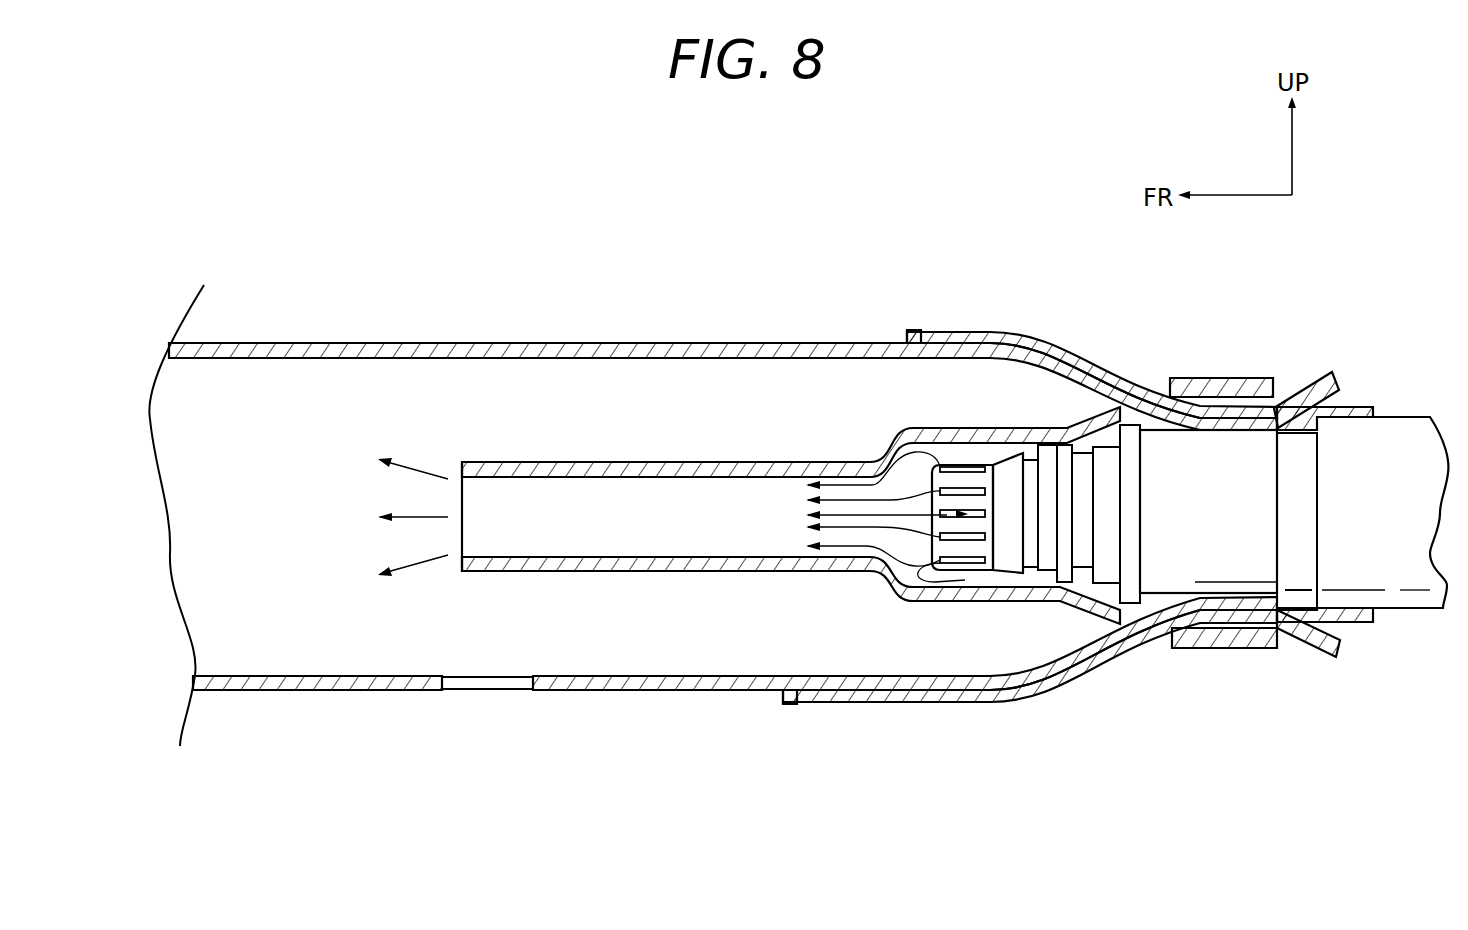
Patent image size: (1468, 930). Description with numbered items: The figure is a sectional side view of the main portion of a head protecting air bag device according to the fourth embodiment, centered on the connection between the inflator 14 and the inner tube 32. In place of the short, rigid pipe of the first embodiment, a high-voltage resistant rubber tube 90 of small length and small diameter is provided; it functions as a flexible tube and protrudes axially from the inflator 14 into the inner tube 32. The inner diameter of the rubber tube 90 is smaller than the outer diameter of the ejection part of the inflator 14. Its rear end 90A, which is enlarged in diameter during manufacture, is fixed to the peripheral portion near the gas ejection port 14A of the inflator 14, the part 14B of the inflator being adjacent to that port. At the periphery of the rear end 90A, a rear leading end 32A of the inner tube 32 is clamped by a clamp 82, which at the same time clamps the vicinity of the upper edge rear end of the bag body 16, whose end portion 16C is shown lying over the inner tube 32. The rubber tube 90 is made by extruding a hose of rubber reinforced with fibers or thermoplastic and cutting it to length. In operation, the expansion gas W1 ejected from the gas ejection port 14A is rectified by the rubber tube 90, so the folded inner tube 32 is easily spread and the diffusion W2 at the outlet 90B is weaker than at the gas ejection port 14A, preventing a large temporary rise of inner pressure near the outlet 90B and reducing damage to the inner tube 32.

The inflator 14 is at (1405, 407).
The gas ejection port 14A is at (915, 585).
The part of the inflator adjacent to the gas ejection port 14B is at (1030, 525).
The bag body 16 is at (1062, 340).
The end portion of hose 16C is at (970, 332).
The inner tube 32 is at (515, 337).
The rear leading end of the inner tube 32A is at (1313, 370).
The clamp 82 is at (1238, 378).
The high-voltage resistant rubber tube 90 is at (676, 461).
The rear end of the high-voltage resistant rubber tube 90A is at (1218, 430).
The outlet of the high-voltage resistant rubber tube 90B is at (457, 490).
The expansion gas ejected from the gas ejection port W1 is at (858, 513).
The diffusion of the expansion gas W2 is at (412, 517).